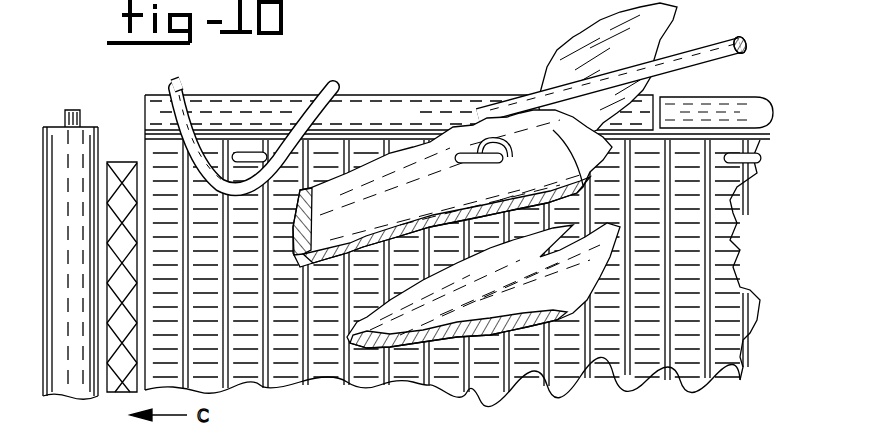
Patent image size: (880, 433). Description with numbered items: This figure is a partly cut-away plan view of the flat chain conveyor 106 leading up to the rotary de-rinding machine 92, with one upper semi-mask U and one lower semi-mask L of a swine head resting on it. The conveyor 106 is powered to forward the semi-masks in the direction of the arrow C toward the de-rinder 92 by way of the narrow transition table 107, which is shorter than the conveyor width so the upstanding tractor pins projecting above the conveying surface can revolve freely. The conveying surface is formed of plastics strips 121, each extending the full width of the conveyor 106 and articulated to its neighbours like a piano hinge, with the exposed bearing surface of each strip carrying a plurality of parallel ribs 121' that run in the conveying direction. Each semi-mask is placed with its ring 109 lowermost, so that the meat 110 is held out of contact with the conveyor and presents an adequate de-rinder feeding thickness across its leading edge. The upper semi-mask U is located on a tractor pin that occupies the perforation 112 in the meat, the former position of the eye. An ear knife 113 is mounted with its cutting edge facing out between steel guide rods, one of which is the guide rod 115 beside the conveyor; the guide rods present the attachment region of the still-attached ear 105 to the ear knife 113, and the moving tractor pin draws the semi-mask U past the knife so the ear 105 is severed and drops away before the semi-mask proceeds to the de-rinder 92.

The rotary de-rinding machine 92 is at (70, 399).
The ear 105 is at (591, 31).
The chain conveyor 106 is at (307, 386).
The transition table 107 is at (120, 161).
The ring 109 is at (293, 244).
The meat 110 is at (472, 410).
The perforation 112 is at (565, 159).
The ear knife 113 is at (457, 115).
The guide rod 115 is at (721, 108).
The plastics strip 121 is at (446, 284).
The rib 121' is at (465, 275).